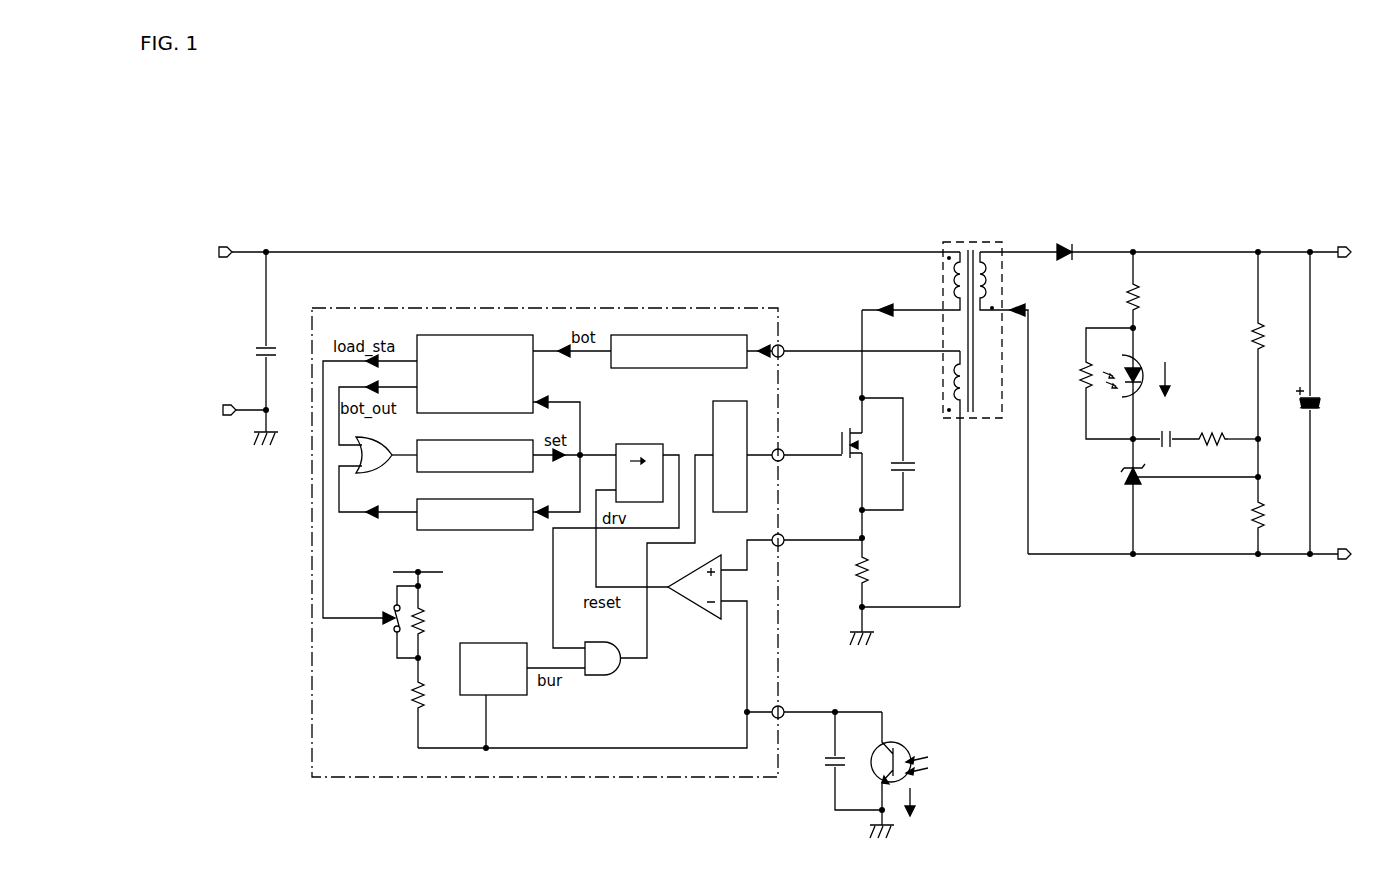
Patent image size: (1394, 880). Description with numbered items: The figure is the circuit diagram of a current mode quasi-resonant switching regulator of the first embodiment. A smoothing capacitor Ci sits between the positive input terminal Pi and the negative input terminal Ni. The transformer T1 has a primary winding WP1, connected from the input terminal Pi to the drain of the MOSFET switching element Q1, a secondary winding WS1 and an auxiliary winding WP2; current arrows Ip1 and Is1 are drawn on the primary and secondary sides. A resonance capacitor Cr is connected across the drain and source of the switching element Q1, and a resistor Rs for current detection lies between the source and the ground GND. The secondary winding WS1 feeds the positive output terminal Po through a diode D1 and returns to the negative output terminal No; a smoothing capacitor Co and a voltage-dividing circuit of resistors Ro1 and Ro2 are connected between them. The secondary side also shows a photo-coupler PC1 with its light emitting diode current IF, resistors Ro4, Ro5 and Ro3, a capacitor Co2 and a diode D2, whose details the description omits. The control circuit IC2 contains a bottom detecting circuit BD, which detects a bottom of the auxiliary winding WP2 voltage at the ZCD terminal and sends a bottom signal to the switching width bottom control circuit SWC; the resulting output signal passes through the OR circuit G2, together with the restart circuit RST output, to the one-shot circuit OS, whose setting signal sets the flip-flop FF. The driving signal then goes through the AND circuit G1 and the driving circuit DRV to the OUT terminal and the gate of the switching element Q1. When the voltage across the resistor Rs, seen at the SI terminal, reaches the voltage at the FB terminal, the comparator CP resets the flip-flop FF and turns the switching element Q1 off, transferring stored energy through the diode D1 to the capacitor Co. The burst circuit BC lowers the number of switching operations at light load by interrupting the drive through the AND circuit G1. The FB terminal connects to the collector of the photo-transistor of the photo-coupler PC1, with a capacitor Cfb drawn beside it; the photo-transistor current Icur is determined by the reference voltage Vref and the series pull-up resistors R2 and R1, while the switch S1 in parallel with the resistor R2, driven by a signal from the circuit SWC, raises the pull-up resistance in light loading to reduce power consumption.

The positive input terminal Pi is at (573, 252).
The negative input terminal Ni is at (240, 423).
The smoothing capacitor Ci is at (253, 331).
The control circuit IC2 is at (545, 544).
The switching width bottom control circuit SWC is at (475, 364).
The one-shot circuit OS is at (475, 446).
The restart circuit RST is at (475, 504).
The bottom detecting circuit BD is at (679, 341).
The flip-flop FF is at (639, 462).
The driving circuit DRV is at (726, 445).
The OR circuit G2 is at (371, 467).
The AND circuit G1 is at (603, 670).
The comparator CP is at (693, 595).
The burst circuit BC is at (493, 684).
The reference voltage Vref is at (418, 570).
The pull-up resistor R1 is at (431, 703).
The resistor R2 is at (431, 623).
The switch S1 is at (386, 622).
The ZCD terminal ZCD is at (794, 342).
The OUT terminal OUT is at (792, 464).
The SI terminal SI is at (785, 531).
The FB terminal FB is at (788, 703).
The switching element Q1 is at (836, 454).
The resonance capacitor Cr is at (898, 454).
The resistor for current detection Rs is at (826, 558).
The ground GND is at (905, 628).
The transformer T1 is at (972, 320).
The primary winding WP1 is at (911, 325).
The auxiliary winding WP2 is at (929, 479).
The secondary winding WS1 is at (1018, 403).
The primary current Ip1 is at (890, 299).
The secondary current Is1 is at (1027, 299).
The diode D1 is at (1195, 242).
The positive output terminal Po is at (1358, 253).
The negative output terminal No is at (1204, 555).
The resistor Ro4 is at (1111, 291).
The resistor Ro5 is at (1088, 383).
The photo-coupler PC1 is at (1137, 383).
The LED forward current IF is at (1171, 379).
The capacitor Co2 is at (1164, 429).
The resistor Ro3 is at (1226, 428).
The shunt regulator / zener diode D2 is at (1175, 496).
The resistor Ro1 is at (1236, 345).
The resistor Ro2 is at (1236, 496).
The smoothing capacitor Co is at (1325, 403).
The feedback capacitor Cfb is at (833, 759).
The current through the photo-transistor Icur is at (924, 802).